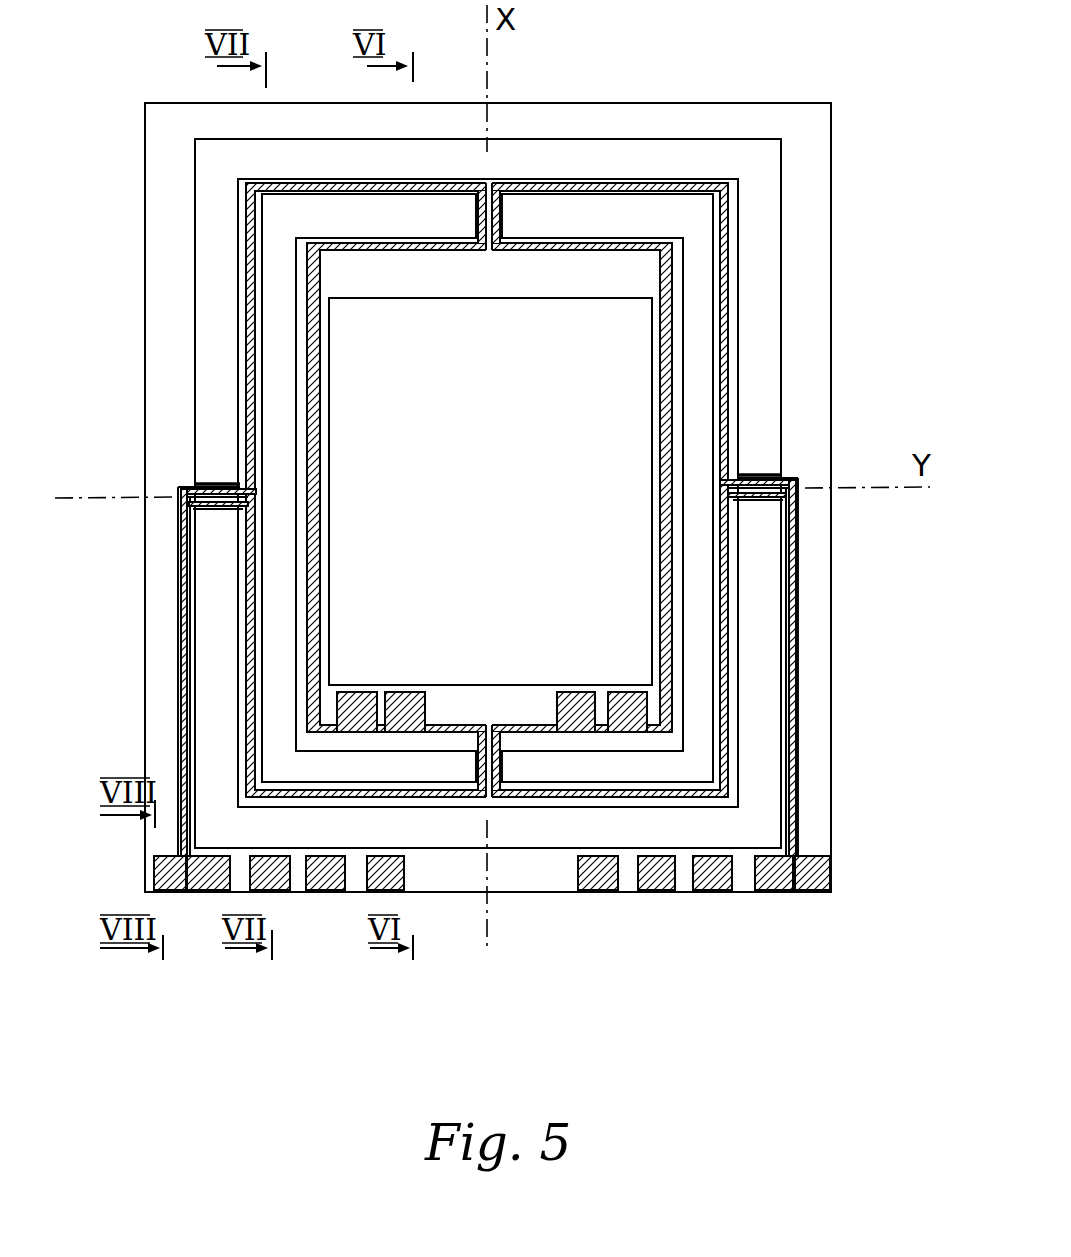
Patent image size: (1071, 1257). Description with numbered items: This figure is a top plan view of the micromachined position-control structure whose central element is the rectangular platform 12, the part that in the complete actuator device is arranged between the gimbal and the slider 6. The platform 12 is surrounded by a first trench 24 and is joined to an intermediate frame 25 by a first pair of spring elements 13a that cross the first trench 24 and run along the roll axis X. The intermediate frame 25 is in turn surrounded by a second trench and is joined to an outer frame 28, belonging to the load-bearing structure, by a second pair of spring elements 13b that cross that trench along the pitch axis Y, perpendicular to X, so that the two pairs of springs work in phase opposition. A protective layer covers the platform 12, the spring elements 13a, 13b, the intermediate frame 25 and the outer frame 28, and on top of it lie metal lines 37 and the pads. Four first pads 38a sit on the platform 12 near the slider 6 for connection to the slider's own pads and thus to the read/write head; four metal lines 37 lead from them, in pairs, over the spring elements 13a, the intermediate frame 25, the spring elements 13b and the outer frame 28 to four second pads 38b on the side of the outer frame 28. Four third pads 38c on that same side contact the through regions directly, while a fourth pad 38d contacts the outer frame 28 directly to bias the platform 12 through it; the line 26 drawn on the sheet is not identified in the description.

The slider 6 is at (498, 515).
The platform 12 is at (531, 292).
The first pair of spring elements 13a is at (465, 210).
The second pair of spring elements 13b is at (213, 466).
The first trench 24 is at (543, 222).
The intermediate frame 25 is at (632, 182).
The fixed frame 26 is at (706, 150).
The outer frame 28 is at (780, 120).
The metal lines 37 is at (243, 325).
The first pads 38a is at (398, 691).
The second pads 38b is at (165, 878).
The third pads 38c is at (278, 880).
The fourth pad 38d is at (333, 877).